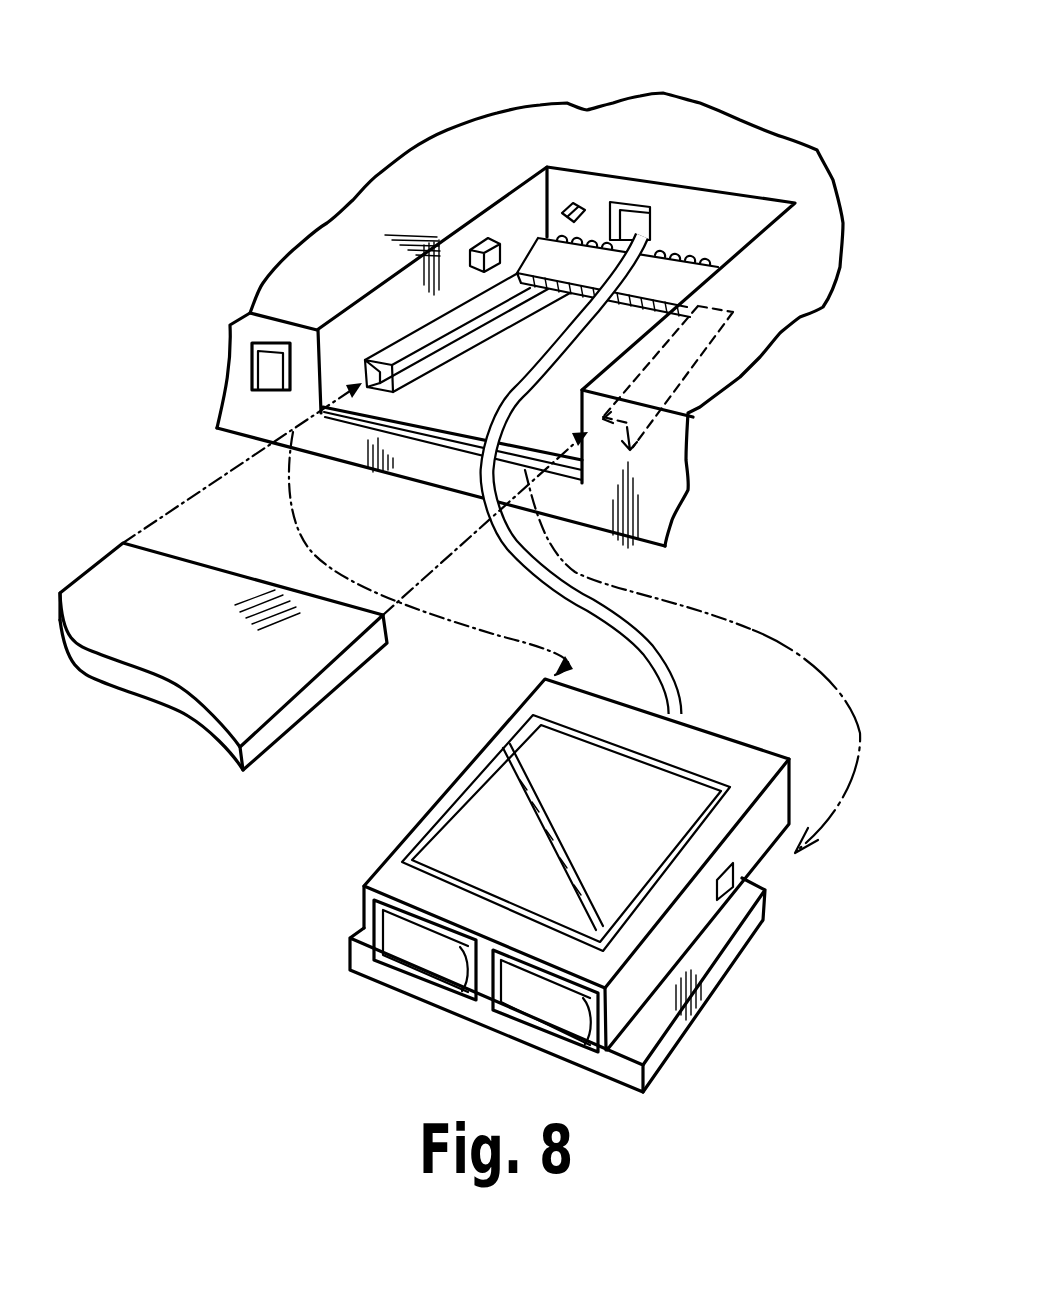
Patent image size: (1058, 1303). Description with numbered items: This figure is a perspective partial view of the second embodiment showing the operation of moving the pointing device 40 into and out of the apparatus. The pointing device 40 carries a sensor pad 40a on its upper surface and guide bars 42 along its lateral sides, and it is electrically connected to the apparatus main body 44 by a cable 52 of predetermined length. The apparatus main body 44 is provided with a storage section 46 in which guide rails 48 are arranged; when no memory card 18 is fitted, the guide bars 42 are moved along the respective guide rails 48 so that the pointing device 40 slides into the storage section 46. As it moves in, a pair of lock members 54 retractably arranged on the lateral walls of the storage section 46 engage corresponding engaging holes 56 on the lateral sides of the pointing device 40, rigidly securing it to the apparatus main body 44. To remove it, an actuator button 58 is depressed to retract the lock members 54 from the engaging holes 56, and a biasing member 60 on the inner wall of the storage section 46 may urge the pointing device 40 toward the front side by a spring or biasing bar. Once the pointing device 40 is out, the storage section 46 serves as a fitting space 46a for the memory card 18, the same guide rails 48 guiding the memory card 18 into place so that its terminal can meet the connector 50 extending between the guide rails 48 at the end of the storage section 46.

The memory card 18 is at (213, 673).
The pointing device 40 is at (509, 865).
The sensor pad 40a is at (555, 825).
The guide bars 42 is at (345, 920).
The apparatus main body 44 is at (793, 302).
The storage section 46 is at (349, 342).
The fitting space 46a is at (473, 358).
The guide rails 48 is at (415, 340).
The connector 50 is at (673, 280).
The cable 52 is at (675, 683).
The lock members 54 is at (488, 233).
The engaging holes 56 is at (733, 867).
The actuator button 58 is at (263, 362).
The biasing member 60 is at (573, 200).